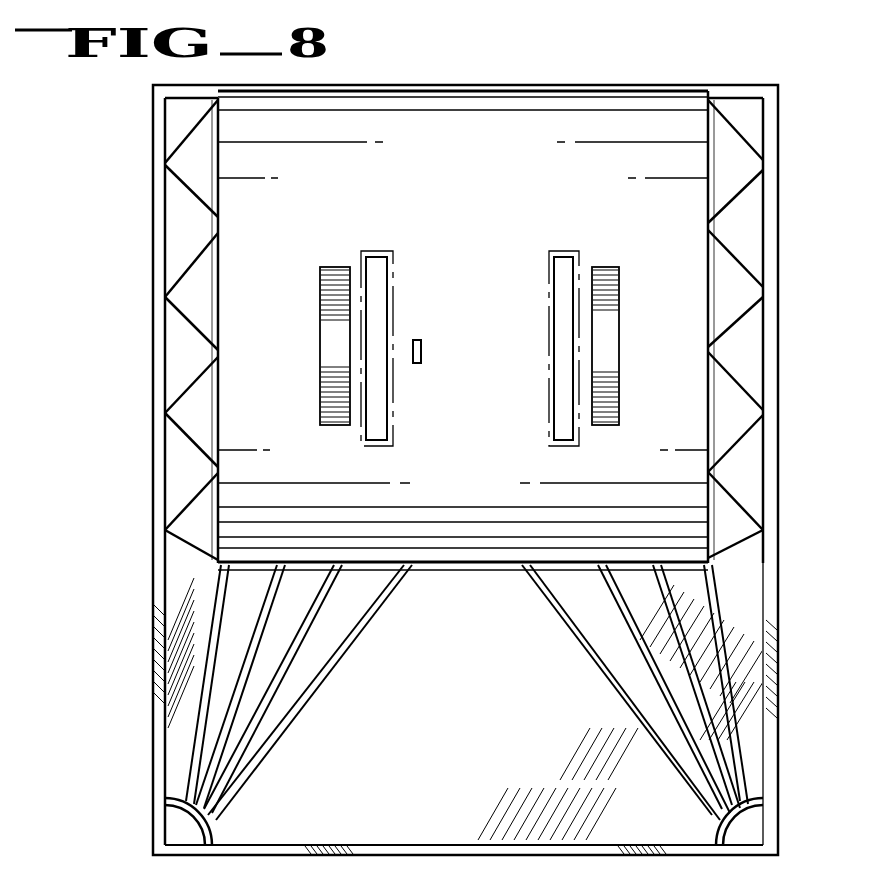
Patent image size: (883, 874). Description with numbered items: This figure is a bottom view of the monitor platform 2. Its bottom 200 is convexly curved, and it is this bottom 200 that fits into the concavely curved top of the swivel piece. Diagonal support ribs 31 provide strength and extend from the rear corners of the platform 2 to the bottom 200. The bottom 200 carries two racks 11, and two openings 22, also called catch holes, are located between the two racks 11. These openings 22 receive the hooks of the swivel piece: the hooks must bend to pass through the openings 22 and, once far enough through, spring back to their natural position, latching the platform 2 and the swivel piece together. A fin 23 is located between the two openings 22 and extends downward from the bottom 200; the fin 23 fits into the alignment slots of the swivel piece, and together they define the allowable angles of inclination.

The platform 2 is at (178, 115).
The bottom 200 is at (498, 142).
The racks 11 is at (324, 313).
The openings 22 is at (377, 272).
The fin 23 is at (413, 363).
The diagonal support ribs 31 is at (222, 775).